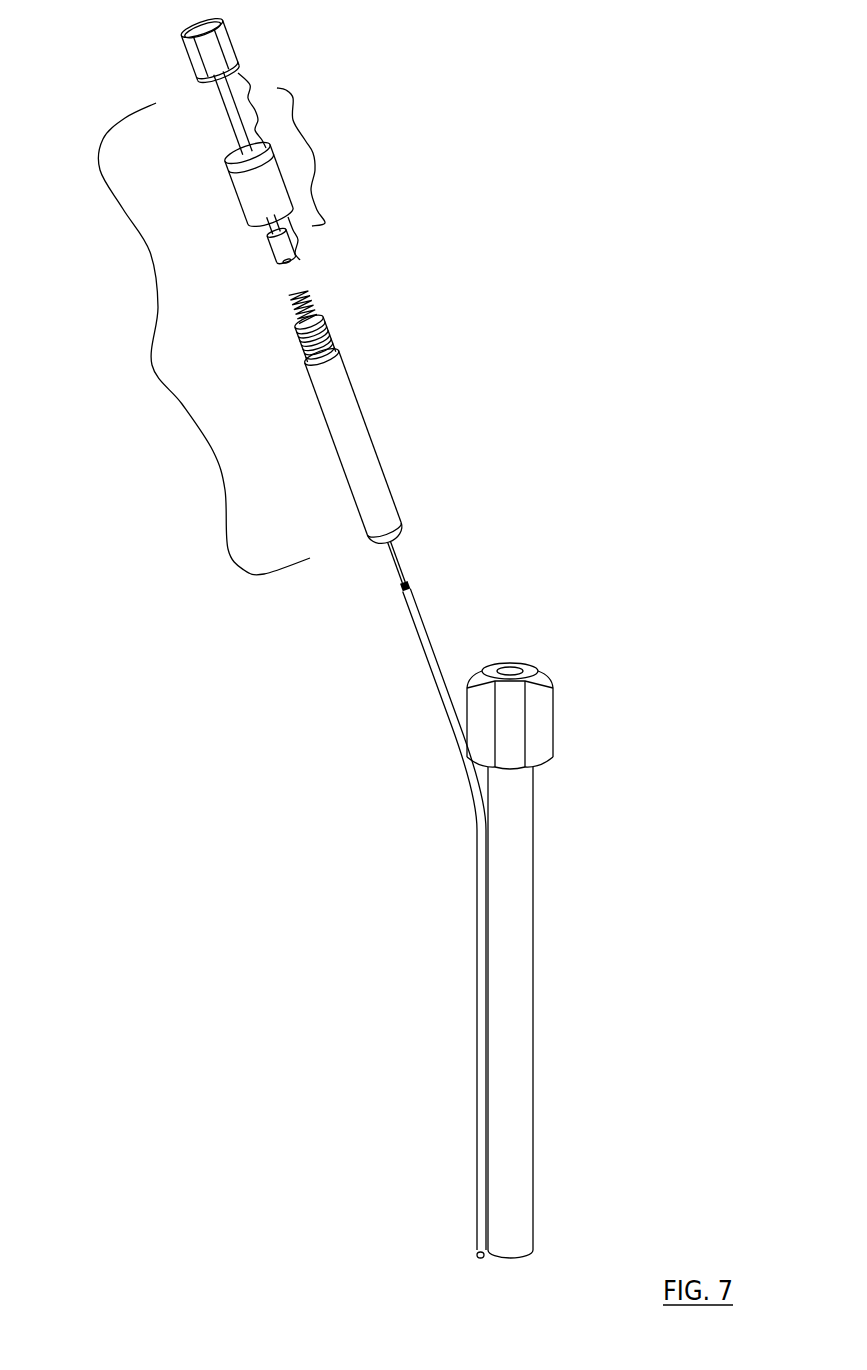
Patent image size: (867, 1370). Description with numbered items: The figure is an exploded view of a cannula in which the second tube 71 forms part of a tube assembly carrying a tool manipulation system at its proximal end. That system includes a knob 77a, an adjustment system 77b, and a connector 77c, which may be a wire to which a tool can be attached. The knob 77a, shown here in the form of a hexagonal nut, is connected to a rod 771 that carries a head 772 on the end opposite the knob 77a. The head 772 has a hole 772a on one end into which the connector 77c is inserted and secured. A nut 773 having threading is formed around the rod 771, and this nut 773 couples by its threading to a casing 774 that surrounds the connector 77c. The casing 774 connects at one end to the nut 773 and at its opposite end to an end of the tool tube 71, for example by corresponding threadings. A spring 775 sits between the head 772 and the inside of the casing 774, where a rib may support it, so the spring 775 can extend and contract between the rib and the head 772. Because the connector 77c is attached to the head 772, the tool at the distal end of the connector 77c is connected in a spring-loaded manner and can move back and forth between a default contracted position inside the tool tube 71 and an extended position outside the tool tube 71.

The knob 77a is at (154, 58).
The rod 771 is at (290, 165).
The nut 773 is at (213, 184).
The head 772 is at (230, 239).
The hole 772a is at (233, 280).
The spring 775 is at (368, 271).
The casing 774 is at (396, 429).
The connector 77c is at (460, 868).
The adjustment system 77b is at (201, 339).
The second tube 71 is at (463, 960).